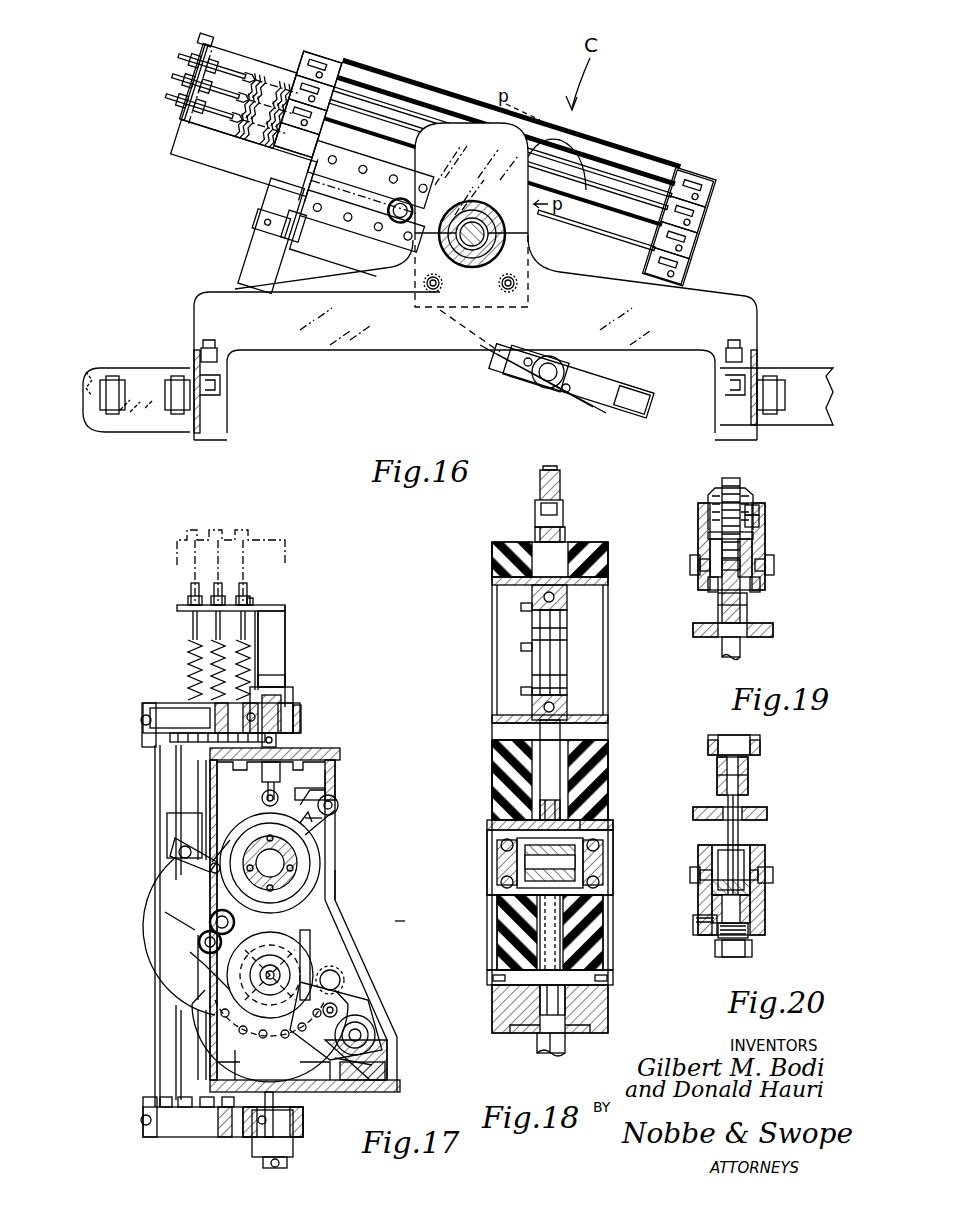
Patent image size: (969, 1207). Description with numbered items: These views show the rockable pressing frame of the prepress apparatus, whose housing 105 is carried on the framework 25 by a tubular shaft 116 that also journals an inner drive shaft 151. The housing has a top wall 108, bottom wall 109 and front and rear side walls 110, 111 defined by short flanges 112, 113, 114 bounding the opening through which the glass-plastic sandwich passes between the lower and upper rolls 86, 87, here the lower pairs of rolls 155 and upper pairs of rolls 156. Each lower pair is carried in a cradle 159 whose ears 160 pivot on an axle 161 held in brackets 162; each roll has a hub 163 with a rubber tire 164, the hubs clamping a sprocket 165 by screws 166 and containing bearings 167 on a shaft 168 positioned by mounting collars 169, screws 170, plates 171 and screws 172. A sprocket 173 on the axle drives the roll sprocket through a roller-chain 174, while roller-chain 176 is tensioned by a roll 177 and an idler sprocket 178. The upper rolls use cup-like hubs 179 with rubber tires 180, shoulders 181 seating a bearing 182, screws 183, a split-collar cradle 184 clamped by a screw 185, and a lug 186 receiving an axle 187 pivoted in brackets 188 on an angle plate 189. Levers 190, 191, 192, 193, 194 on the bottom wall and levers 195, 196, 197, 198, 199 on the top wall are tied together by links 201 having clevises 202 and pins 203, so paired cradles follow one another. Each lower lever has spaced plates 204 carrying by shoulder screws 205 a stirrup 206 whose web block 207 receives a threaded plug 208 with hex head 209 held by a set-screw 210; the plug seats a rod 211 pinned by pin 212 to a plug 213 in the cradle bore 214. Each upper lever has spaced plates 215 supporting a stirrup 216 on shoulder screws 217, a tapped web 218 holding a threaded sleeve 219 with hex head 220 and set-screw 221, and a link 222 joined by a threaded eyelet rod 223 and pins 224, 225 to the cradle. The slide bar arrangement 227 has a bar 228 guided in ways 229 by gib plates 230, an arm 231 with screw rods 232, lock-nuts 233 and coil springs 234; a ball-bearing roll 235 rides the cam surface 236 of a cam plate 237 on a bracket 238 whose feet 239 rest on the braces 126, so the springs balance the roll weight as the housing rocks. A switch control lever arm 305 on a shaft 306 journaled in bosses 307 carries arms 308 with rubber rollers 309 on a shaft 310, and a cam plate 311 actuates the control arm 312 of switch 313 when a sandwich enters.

In FIG. 16, the framework 25 is at (157, 352).
In FIG. 17, the lower pressing rolls 86 is at (200, 998).
In FIG. 17, the upper pressing rolls 87 is at (358, 907).
In FIG. 16, the housing 105 is at (380, 262).
In FIG. 17, the housing 105 is at (343, 748).
In FIG. 17, the top wall 108 is at (310, 758).
In FIG. 19, the top wall 108 is at (774, 630).
In FIG. 17, the bottom wall 109 is at (330, 1090).
In FIG. 20, the bottom wall 109 is at (768, 812).
In FIG. 17, the front side wall 110 is at (352, 768).
In FIG. 17, the rear side wall 111 is at (200, 775).
In FIG. 17, the inwardly directed flange 112 is at (205, 785).
In FIG. 17, the inwardly directed flange 113 is at (205, 808).
In FIG. 17, the inwardly directed flange 114 is at (215, 1068).
In FIG. 16, the tubular shaft 116 is at (470, 268).
In FIG. 16, the braces 126 is at (200, 420).
In FIG. 16, the shaft 151 is at (490, 226).
In FIG. 17, the lower pairs of rolls 155 is at (342, 969).
In FIG. 18, the lower pairs of rolls 155 is at (632, 920).
In FIG. 17, the upper pairs of rolls 156 is at (335, 874).
In FIG. 18, the upper pairs of rolls 156 is at (478, 664).
In FIG. 17, the cradle 159 is at (198, 1032).
In FIG. 18, the cradle 159 is at (510, 1036).
In FIG. 20, the cradle 159 is at (768, 744).
In FIG. 17, the ears 160 is at (376, 1036).
In FIG. 17, the axle 161 is at (370, 1072).
In FIG. 17, the brackets 162 is at (330, 1070).
In FIG. 18, the hub 163 is at (500, 822).
In FIG. 18, the rubber tire 164 is at (510, 765).
In FIG. 17, the sprocket 165 is at (318, 950).
In FIG. 18, the sprocket 165 is at (560, 812).
In FIG. 18, the screws 166 is at (608, 822).
In FIG. 18, the bearings 167 is at (502, 840).
In FIG. 18, the shaft 168 is at (500, 882).
In FIG. 18, the mounting collar 169 is at (497, 848).
In FIG. 18, the screws 170 is at (520, 865).
In FIG. 17, the plates 171 is at (240, 1000).
In FIG. 18, the plates 171 is at (605, 905).
In FIG. 18, the screws 172 is at (500, 978).
In FIG. 17, the sprocket 173 is at (372, 1060).
In FIG. 17, the roller-chain 174 is at (372, 1015).
In FIG. 18, the roller-chain 174 is at (568, 810).
In FIG. 17, the roller-chain 176 is at (405, 928).
In FIG. 17, the roll 177 is at (340, 1008).
In FIG. 17, the idler sprocket 178 is at (345, 983).
In FIG. 18, the cup-like hubs 179 is at (500, 715).
In FIG. 18, the rubber tires 180 is at (500, 567).
In FIG. 18, the concentric shoulders 181 is at (525, 694).
In FIG. 18, the bearing 182 is at (568, 703).
In FIG. 18, the screws 183 is at (520, 647).
In FIG. 17, the cradle 184 is at (320, 852).
In FIG. 18, the cradle 184 is at (580, 536).
In FIG. 17, the screw 185 is at (168, 852).
In FIG. 17, the lug 186 is at (318, 830).
In FIG. 17, the axle 187 is at (315, 820).
In FIG. 17, the brackets 188 is at (338, 805).
In FIG. 17, the angle plate 189 is at (318, 795).
In FIG. 16, the lever 190 is at (688, 258).
In FIG. 17, the lever 190 is at (303, 1128).
In FIG. 16, the lever 191 is at (696, 236).
In FIG. 16, the lever 192 is at (700, 210).
In FIG. 16, the lever 193 is at (702, 186).
In FIG. 17, the lever 193 is at (182, 1128).
In FIG. 16, the lever 194 is at (633, 376).
In FIG. 16, the lever 195 is at (393, 128).
In FIG. 17, the lever 195 is at (300, 726).
In FIG. 16, the lever 196 is at (345, 108).
In FIG. 17, the lever 196 is at (300, 712).
In FIG. 16, the lever 197 is at (335, 80).
In FIG. 17, the lever 197 is at (240, 720).
In FIG. 16, the lever 198 is at (325, 60).
In FIG. 17, the lever 198 is at (178, 712).
In FIG. 16, the lever 199 is at (250, 253).
In FIG. 16, the link 201 is at (636, 170).
In FIG. 17, the link 201 is at (155, 780).
In FIG. 16, the clevis 202 is at (692, 178).
In FIG. 17, the clevis 202 is at (142, 740).
In FIG. 17, the pin 203 is at (141, 720).
In FIG. 20, the spaced plates 204 is at (712, 850).
In FIG. 20, the shoulder screws 205 is at (775, 876).
In FIG. 17, the stirrup 206 is at (290, 1148).
In FIG. 20, the stirrup 206 is at (765, 898).
In FIG. 20, the web block 207 is at (750, 920).
In FIG. 20, the threaded plug 208 is at (750, 935).
In FIG. 20, the hex head 209 is at (753, 953).
In FIG. 20, the set-screw 210 is at (705, 936).
In FIG. 17, the rod 211 is at (275, 1100).
In FIG. 20, the rod 211 is at (737, 868).
In FIG. 20, the pin 212 is at (750, 782).
In FIG. 18, the plug 213 is at (552, 1018).
In FIG. 20, the plug 213 is at (760, 750).
In FIG. 18, the bore 214 is at (560, 992).
In FIG. 20, the bore 214 is at (712, 748).
In FIG. 19, the spaced plates 215 is at (710, 585).
In FIG. 17, the stirrup 216 is at (295, 694).
In FIG. 19, the stirrup 216 is at (765, 548).
In FIG. 19, the shoulder screws 217 is at (694, 558).
In FIG. 19, the web 218 is at (700, 515).
In FIG. 19, the threaded sleeve 219 is at (760, 510).
In FIG. 19, the hex head 220 is at (752, 496).
In FIG. 19, the set-screw 221 is at (760, 522).
In FIG. 17, the link 222 is at (250, 781).
In FIG. 18, the link 222 is at (540, 490).
In FIG. 19, the link 222 is at (740, 645).
In FIG. 19, the threaded eyelet rod 223 is at (740, 484).
In FIG. 19, the pin 224 is at (748, 612).
In FIG. 17, the pin 225 is at (262, 798).
In FIG. 18, the pin 225 is at (560, 512).
In FIG. 16, the slide bar arrangement 227 is at (190, 180).
In FIG. 17, the slide bar arrangement 227 is at (295, 627).
In FIG. 16, the bar 228 is at (255, 165).
In FIG. 17, the bar 228 is at (272, 645).
In FIG. 16, the ways 229 is at (318, 190).
In FIG. 16, the gib plates 230 is at (415, 176).
In FIG. 16, the arm 231 is at (210, 56).
In FIG. 17, the arm 231 is at (177, 608).
In FIG. 16, the screw rods 232 is at (180, 100).
In FIG. 17, the screw rods 232 is at (240, 583).
In FIG. 16, the lock-nut 233 is at (211, 50).
In FIG. 17, the lock-nut 233 is at (252, 601).
In FIG. 16, the coil spring 234 is at (262, 90).
In FIG. 17, the coil spring 234 is at (238, 650).
In FIG. 16, the ball-bearing roll 235 is at (430, 260).
In FIG. 16, the cam surface 236 is at (465, 111).
In FIG. 16, the cam plate 237 is at (510, 128).
In FIG. 16, the bracket 238 is at (427, 333).
In FIG. 16, the feet 239 is at (210, 350).
In FIG. 17, the switch control lever arm 305 is at (180, 934).
In FIG. 17, the main support shaft 306 is at (200, 960).
In FIG. 17, the bosses 307 is at (197, 975).
In FIG. 17, the arms 308 is at (200, 940).
In FIG. 17, the rubber rollers 309 is at (214, 914).
In FIG. 17, the shaft 310 is at (216, 921).
In FIG. 16, the cam plate 311 is at (550, 150).
In FIG. 17, the cam plate 311 is at (165, 912).
In FIG. 17, the control arm 312 is at (215, 868).
In FIG. 16, the switch 313 is at (413, 130).
In FIG. 17, the switch 313 is at (190, 860).